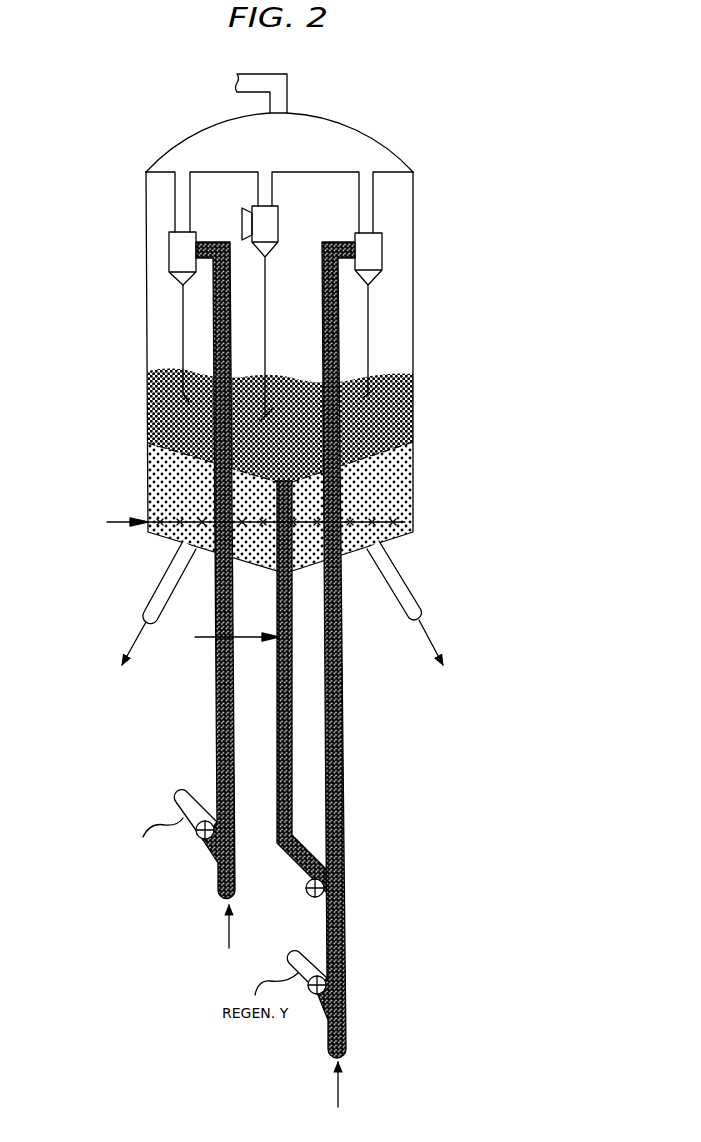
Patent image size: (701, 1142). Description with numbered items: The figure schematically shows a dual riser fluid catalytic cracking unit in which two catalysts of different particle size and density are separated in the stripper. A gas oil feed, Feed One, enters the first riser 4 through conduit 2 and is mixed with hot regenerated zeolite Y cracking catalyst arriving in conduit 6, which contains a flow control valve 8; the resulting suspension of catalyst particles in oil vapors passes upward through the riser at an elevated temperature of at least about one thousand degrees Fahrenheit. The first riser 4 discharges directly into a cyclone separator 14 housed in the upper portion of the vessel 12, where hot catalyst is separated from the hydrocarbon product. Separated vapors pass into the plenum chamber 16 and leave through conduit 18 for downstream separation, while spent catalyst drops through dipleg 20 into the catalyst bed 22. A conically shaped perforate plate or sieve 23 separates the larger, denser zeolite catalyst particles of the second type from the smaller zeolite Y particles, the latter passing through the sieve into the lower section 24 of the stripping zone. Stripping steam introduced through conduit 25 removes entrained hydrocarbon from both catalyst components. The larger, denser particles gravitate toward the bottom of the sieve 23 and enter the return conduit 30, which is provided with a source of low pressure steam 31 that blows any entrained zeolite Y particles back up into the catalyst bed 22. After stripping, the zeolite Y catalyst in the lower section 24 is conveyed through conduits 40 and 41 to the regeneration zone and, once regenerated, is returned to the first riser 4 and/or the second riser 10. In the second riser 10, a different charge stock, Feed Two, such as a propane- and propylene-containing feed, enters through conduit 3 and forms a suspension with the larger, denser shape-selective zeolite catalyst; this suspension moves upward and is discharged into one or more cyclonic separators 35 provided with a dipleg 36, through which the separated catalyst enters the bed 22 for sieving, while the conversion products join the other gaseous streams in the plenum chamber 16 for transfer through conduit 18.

The conduit 2 is at (230, 928).
The conduit 3 is at (340, 1085).
The first riser 4 is at (217, 723).
The conduit 6 is at (182, 797).
The flow control valve 8 is at (207, 843).
The second riser 10 is at (343, 783).
The vessel 12 is at (147, 313).
The cyclone separator 14 is at (180, 256).
The plenum chamber 16 is at (291, 161).
The conduit 18 is at (287, 76).
The dipleg 20 is at (183, 352).
The catalyst bed 22 is at (173, 413).
The conically shaped perforate plate or sieve 23 is at (147, 457).
The lower section of the stripping zone 24 is at (171, 492).
The conduit 25 is at (125, 525).
The return conduit 30 is at (277, 598).
The source of low pressure steam 31 is at (208, 643).
The cyclonic separator 35 is at (370, 253).
The dipleg 36 is at (370, 352).
The conduit 40 is at (155, 595).
The conduit 41 is at (393, 556).